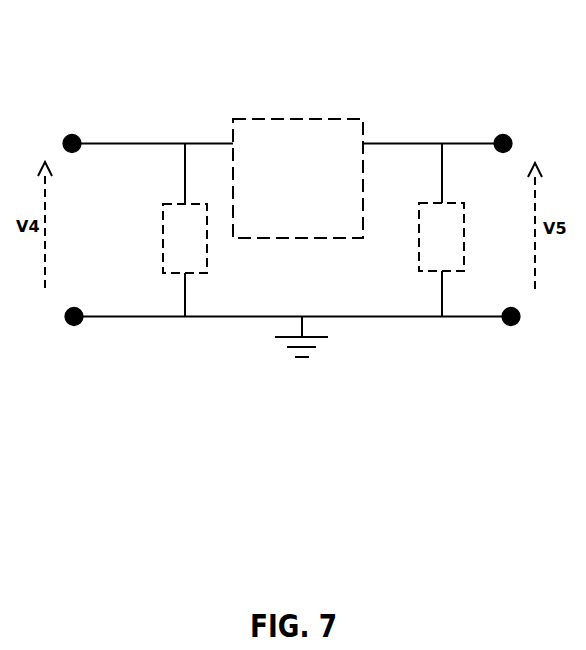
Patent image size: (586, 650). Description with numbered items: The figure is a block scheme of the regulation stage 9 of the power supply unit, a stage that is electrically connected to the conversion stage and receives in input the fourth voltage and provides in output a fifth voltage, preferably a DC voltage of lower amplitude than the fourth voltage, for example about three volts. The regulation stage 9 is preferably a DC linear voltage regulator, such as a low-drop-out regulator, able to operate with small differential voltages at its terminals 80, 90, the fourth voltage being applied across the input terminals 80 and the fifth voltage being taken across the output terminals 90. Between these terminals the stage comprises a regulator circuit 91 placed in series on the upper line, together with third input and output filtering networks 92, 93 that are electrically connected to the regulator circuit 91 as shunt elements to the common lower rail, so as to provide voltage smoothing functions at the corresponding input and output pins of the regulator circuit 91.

The input terminal 80 is at (78, 338).
The output terminal 90 is at (516, 338).
The regulator circuit 91 is at (263, 108).
The third input filtering network 92 is at (157, 233).
The third output filtering network 93 is at (418, 248).
The regulation stage 9 is at (303, 425).